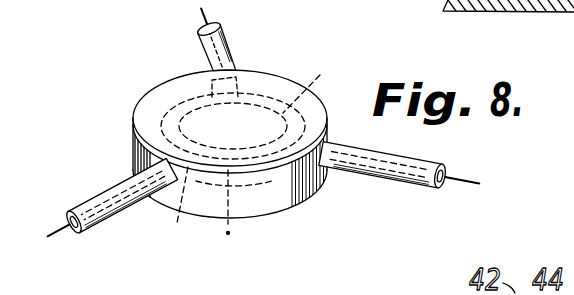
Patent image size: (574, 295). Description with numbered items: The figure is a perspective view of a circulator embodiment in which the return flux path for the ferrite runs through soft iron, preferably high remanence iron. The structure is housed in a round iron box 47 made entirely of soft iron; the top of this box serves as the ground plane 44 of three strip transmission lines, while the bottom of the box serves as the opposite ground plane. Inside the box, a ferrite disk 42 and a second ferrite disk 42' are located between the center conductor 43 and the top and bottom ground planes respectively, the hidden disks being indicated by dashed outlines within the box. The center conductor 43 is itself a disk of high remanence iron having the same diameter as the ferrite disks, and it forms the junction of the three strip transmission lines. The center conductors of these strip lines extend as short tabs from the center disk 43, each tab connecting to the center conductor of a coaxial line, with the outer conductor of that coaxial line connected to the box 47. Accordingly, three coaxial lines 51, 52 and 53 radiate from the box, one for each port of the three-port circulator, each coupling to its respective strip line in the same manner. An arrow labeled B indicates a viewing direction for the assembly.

The ground plane 44 is at (201, 128).
The round iron box 47 is at (128, 145).
The ferrite disk 42 is at (236, 103).
The ferrite disk 42' is at (234, 213).
The center conductor 43 is at (257, 159).
The coaxial line 51 is at (390, 178).
The coaxial line 52 is at (224, 38).
The coaxial line 53 is at (101, 190).
The viewing direction B is at (152, 226).